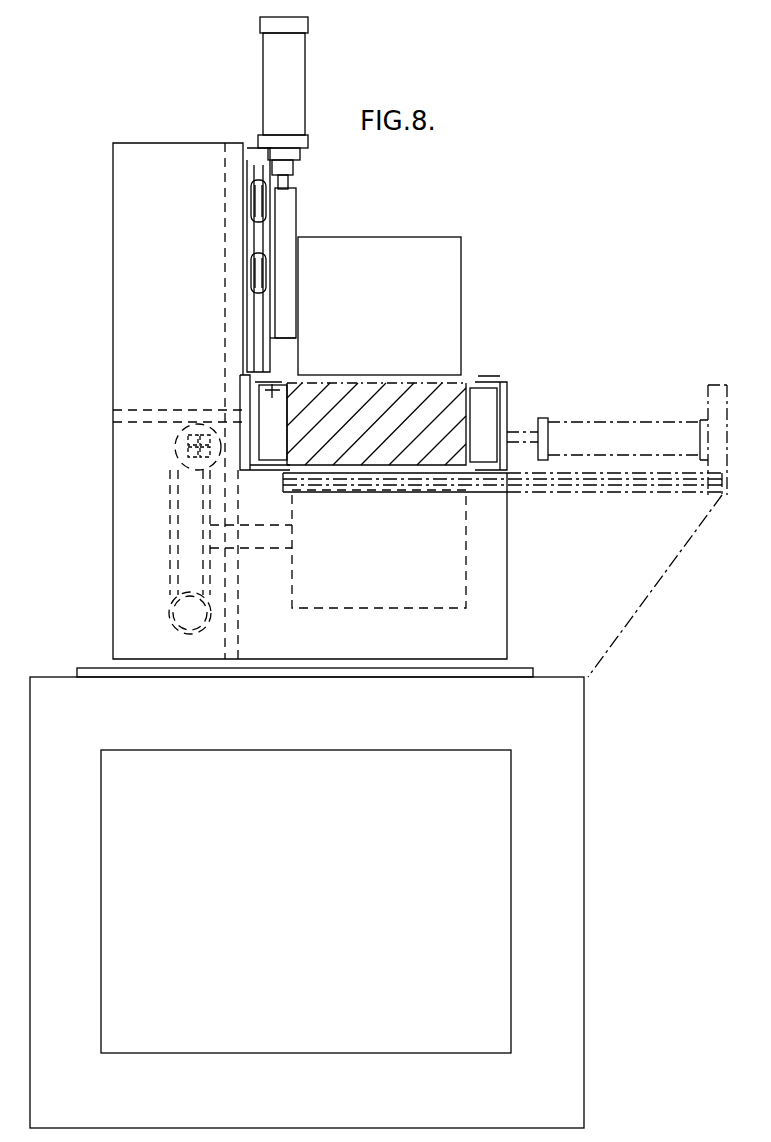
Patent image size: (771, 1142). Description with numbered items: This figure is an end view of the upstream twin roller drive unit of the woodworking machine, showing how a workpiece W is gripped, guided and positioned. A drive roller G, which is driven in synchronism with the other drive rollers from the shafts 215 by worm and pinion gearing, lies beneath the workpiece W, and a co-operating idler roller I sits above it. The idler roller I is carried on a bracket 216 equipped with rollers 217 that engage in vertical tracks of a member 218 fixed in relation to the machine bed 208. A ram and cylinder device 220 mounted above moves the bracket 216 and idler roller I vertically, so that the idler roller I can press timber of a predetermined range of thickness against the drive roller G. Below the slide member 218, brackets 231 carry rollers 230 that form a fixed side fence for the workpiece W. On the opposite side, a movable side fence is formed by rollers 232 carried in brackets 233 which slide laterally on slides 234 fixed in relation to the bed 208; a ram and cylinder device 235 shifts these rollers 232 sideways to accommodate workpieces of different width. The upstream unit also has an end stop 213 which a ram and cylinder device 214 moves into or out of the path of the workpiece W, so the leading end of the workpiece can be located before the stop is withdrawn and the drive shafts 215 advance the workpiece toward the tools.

The machine bed 208 is at (307, 902).
The end stop 213 is at (305, 445).
The ram and cylinder device 214 is at (175, 445).
The shafts 215 is at (172, 612).
The bracket 216 is at (288, 190).
The rollers 217 is at (253, 268).
The member 218 is at (270, 233).
The ram and cylinder device 220 is at (272, 62).
The rollers 230 is at (272, 395).
The brackets 231 is at (250, 407).
The rollers 232 is at (502, 383).
The brackets 233 is at (508, 418).
The slides 234 is at (618, 494).
The ram and cylinder device 235 is at (588, 425).
The idler roller I is at (453, 270).
The workpiece W is at (423, 387).
The drive roller G is at (470, 598).